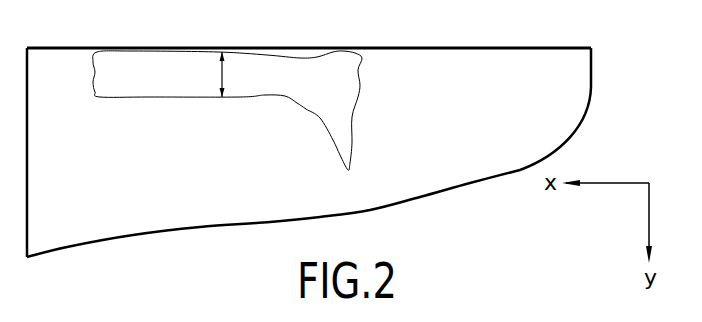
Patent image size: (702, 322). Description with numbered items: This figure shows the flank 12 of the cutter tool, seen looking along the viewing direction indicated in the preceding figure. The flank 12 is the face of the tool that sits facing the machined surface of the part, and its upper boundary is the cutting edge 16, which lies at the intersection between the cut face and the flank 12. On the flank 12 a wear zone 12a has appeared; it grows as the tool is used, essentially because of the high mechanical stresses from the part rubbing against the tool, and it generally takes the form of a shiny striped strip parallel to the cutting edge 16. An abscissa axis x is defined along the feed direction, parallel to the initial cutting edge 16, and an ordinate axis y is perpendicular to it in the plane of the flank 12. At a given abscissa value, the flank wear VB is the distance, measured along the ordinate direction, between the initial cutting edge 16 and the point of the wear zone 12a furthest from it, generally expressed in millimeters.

The flank 12 is at (217, 198).
The wear zone 12a is at (105, 74).
The cutting edge 16 is at (432, 47).
The flank wear VB is at (220, 68).